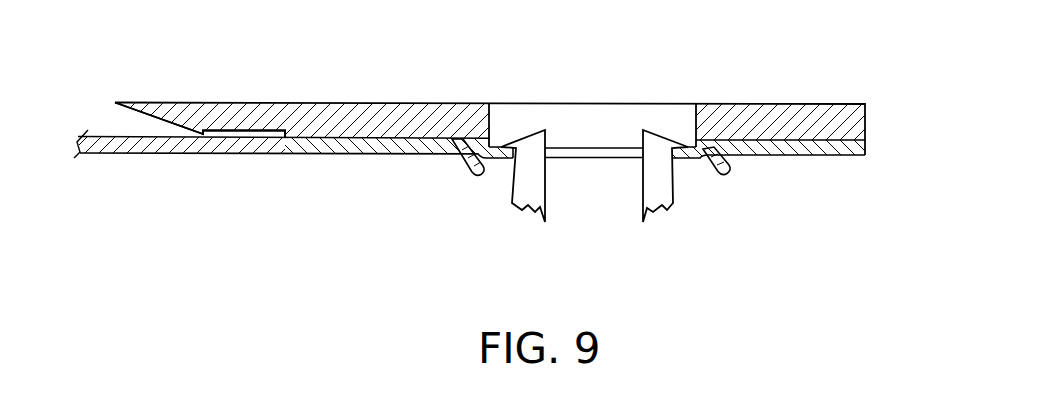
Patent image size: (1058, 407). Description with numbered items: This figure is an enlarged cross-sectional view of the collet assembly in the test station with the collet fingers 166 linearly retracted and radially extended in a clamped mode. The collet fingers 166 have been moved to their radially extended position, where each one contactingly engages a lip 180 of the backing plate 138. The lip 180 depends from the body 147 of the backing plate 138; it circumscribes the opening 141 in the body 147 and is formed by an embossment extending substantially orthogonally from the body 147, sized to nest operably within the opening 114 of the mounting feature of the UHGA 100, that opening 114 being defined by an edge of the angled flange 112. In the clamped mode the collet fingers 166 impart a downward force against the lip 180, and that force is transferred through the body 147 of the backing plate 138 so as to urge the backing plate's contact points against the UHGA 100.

The UHGA 100 is at (866, 155).
The angled flange 112 is at (462, 165).
The mounting feature opening 114 is at (700, 181).
The backing plate 138 is at (866, 113).
The opening 141 is at (605, 129).
The body 147 is at (337, 102).
The collet fingers 166 is at (523, 131).
The lip 180 is at (507, 162).